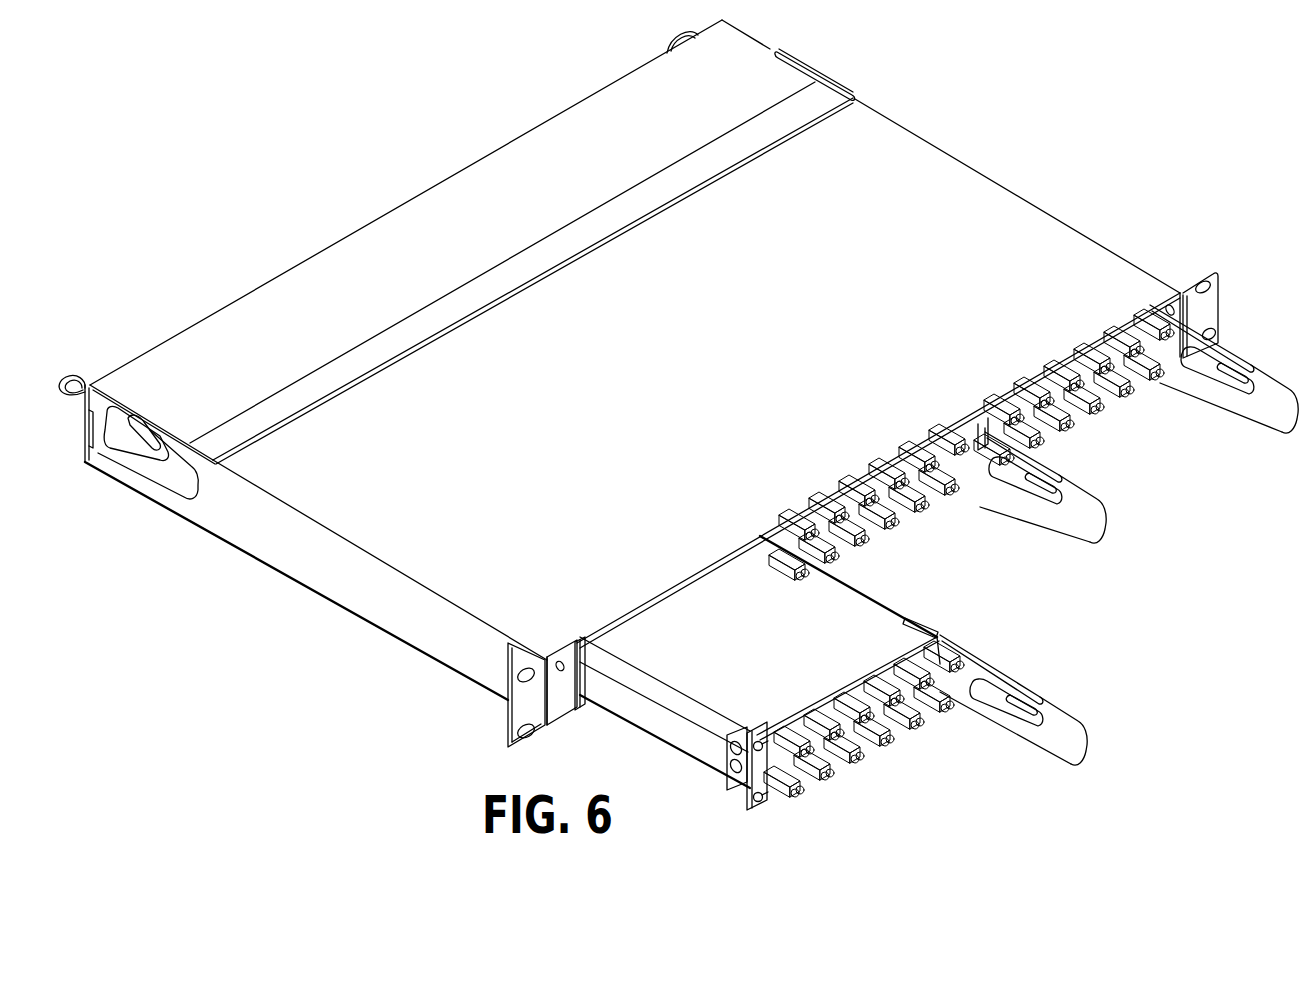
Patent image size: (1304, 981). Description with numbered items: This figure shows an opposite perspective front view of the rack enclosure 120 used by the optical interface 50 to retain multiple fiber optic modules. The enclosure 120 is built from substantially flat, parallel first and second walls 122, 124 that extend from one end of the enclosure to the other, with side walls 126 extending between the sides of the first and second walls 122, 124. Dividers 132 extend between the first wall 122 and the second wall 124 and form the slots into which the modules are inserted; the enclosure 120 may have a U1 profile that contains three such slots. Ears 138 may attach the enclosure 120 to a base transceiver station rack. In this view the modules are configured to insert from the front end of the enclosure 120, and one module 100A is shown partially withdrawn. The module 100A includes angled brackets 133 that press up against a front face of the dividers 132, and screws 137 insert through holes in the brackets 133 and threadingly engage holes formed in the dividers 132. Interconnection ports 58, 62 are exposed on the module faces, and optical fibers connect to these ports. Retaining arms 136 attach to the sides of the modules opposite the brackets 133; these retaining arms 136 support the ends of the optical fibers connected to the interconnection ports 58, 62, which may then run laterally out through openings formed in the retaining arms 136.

The optical interface 50 is at (396, 160).
The rack enclosure 120 is at (1117, 273).
The first wall 122 is at (995, 202).
The second wall 124 is at (570, 718).
The side walls 126 is at (342, 596).
The dividers 132 is at (592, 642).
The angled brackets 133 is at (775, 738).
The retaining arms 136 is at (130, 478).
The screws 137 is at (767, 806).
The ears 138 is at (506, 729).
The interconnection ports 58 is at (1082, 362).
The interconnection ports 62 is at (788, 796).
The module 100A is at (870, 598).